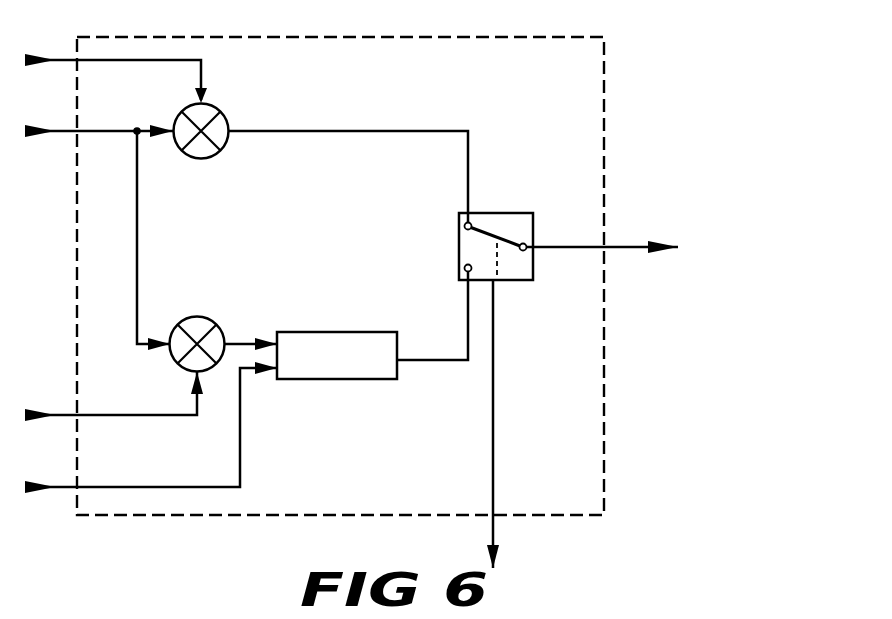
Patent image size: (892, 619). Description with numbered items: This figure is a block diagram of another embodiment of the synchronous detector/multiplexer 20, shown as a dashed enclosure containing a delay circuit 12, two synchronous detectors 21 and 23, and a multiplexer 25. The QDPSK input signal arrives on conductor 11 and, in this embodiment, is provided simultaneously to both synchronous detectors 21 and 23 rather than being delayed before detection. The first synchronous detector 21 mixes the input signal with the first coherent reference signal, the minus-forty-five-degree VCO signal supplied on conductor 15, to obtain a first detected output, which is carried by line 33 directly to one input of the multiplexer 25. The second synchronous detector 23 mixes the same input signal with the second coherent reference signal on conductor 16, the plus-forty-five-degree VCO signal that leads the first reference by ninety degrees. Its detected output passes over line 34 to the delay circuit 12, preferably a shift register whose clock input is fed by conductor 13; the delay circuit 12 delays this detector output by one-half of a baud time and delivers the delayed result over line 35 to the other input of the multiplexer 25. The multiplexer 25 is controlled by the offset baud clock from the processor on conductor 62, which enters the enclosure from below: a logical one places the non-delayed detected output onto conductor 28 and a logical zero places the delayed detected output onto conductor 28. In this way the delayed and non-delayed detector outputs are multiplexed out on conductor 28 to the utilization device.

The synchronous detector/multiplexer 20 is at (162, 37).
The conductor 15 is at (71, 60).
The conductor 11 is at (71, 131).
The synchronous detector 21 is at (220, 112).
The first multiplier output line 33 is at (333, 131).
The multiplexer 25 is at (508, 212).
The conductor 28 is at (620, 245).
The conductor 62 is at (494, 532).
The synchronous detector 23 is at (203, 317).
The second multiplier output line 34 is at (238, 345).
The delay circuit 12 is at (323, 330).
The delay unit output line 35 is at (412, 358).
The conductor 16 is at (67, 415).
The conductor 13 is at (67, 487).